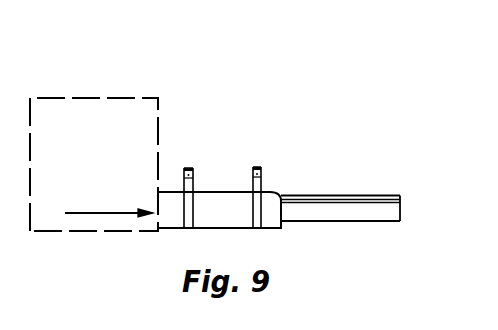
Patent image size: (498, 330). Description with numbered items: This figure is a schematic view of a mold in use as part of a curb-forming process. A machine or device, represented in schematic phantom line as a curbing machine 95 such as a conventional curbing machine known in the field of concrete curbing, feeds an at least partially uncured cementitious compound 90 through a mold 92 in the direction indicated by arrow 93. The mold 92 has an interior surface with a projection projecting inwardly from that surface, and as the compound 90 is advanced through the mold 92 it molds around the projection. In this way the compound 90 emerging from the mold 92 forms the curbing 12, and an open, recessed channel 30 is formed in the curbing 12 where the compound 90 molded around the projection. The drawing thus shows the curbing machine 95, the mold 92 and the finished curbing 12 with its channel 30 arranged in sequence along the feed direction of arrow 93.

The curbing machine 95 is at (115, 102).
The arrow 93 is at (85, 213).
The mold 92 is at (212, 193).
The cementitious compound 90 is at (358, 195).
The recessed channel 30 is at (371, 205).
The curbing 12 is at (402, 214).